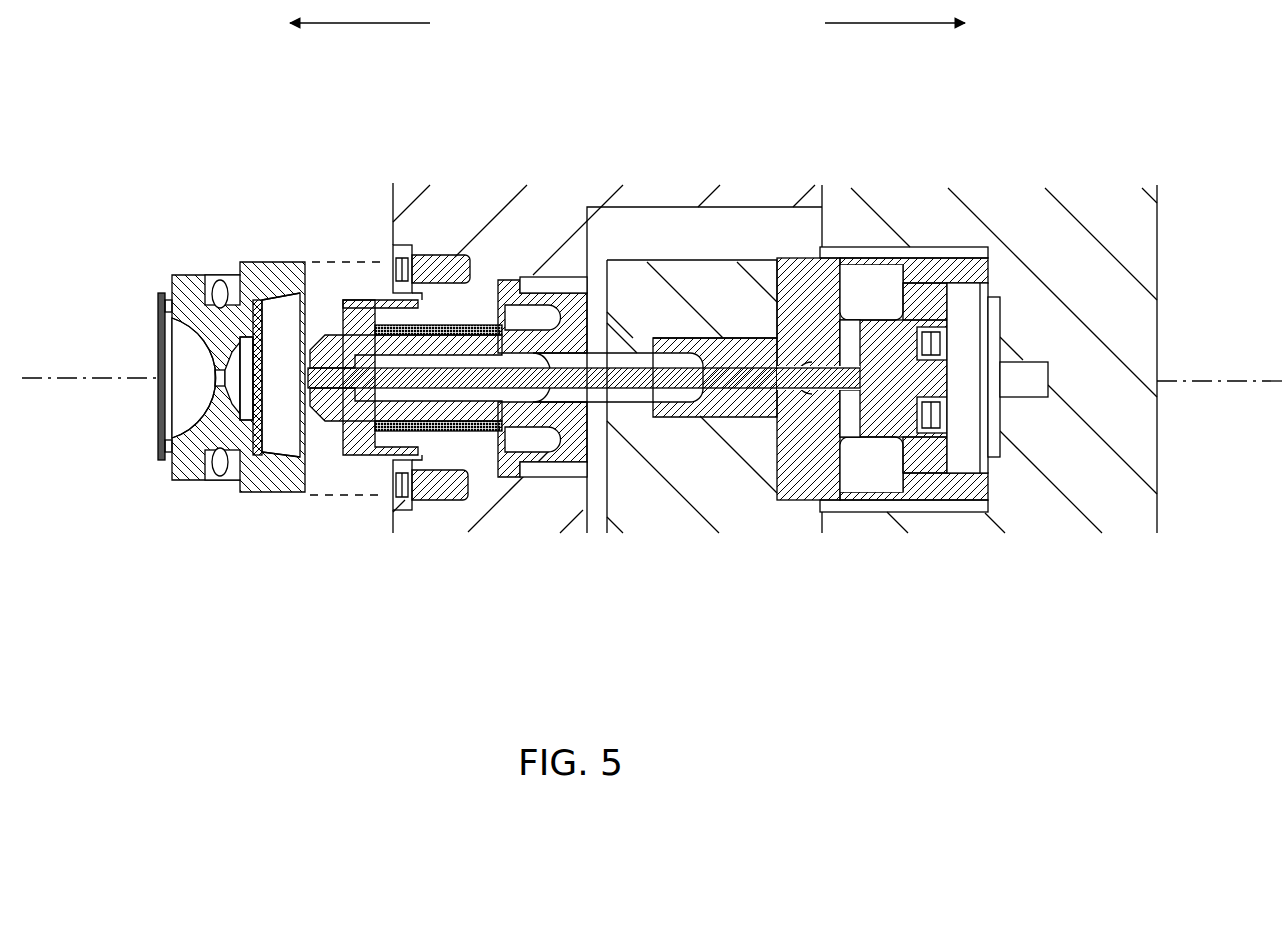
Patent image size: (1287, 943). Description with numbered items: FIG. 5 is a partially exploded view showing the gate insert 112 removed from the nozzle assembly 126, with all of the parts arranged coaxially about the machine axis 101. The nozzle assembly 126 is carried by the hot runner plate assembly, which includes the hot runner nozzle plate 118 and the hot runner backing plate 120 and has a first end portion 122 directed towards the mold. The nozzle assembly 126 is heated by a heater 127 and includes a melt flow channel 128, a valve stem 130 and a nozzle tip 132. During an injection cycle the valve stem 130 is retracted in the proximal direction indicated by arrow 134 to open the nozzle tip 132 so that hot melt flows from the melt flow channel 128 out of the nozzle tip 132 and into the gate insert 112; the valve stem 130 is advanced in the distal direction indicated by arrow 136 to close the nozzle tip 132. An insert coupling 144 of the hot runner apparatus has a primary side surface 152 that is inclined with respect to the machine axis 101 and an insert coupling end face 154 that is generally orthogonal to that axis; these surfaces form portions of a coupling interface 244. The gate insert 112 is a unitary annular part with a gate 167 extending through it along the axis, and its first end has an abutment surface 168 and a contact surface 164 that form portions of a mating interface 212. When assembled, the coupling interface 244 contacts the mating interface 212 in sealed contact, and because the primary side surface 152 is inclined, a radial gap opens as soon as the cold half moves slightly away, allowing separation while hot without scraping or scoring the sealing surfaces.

The machine axis 101 is at (72, 388).
The gate insert 112 is at (185, 478).
The hot runner nozzle plate 118 is at (518, 218).
The hot runner backing plate 120 is at (1128, 497).
The first end portion 122 is at (450, 226).
The nozzle assembly 126 is at (575, 443).
The melt flow channel 128 is at (673, 397).
The valve stem 130 is at (820, 512).
The heater 127 is at (490, 432).
The nozzle tip 132 is at (345, 402).
The arrow indicating proximal direction 134 is at (905, 23).
The arrow indicating distal direction 136 is at (352, 23).
The insert coupling 144 is at (350, 462).
The primary side surface 152 is at (352, 299).
The insert coupling end face 154 is at (343, 320).
The contact surface 164 is at (262, 444).
The gate 167 is at (220, 377).
The abutment surface 168 is at (255, 436).
The mating interface 212 is at (285, 390).
The coupling interface 244 is at (335, 260).